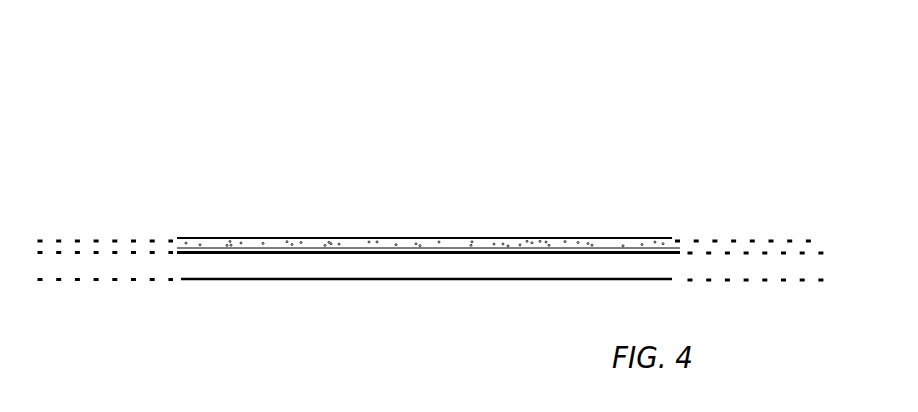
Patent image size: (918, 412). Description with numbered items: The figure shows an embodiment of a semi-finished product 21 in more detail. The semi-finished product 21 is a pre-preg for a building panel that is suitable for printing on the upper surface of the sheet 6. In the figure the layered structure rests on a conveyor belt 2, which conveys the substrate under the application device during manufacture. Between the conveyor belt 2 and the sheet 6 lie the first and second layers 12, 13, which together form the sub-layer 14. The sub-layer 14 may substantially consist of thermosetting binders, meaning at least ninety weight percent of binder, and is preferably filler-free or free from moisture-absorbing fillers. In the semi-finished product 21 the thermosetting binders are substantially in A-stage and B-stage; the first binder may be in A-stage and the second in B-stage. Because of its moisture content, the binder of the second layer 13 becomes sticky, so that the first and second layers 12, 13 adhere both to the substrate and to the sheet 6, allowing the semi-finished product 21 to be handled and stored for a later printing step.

The conveyor belt 2 is at (297, 265).
The sheet 6 is at (482, 238).
The first layer 12 is at (438, 253).
The second layer 13 is at (403, 247).
The sub-layer 14 is at (616, 246).
The semi-finished product 21 is at (256, 193).